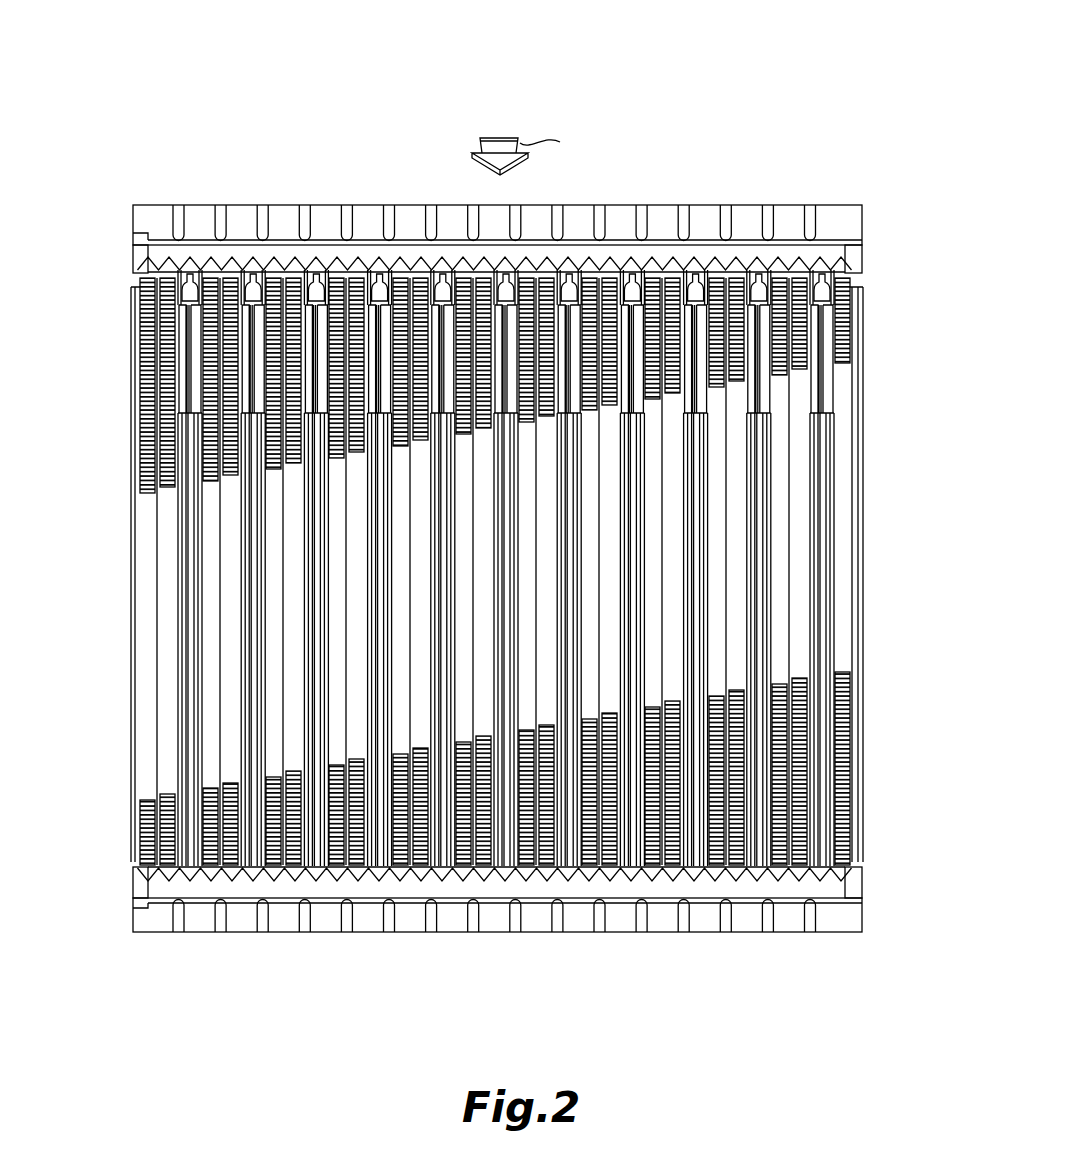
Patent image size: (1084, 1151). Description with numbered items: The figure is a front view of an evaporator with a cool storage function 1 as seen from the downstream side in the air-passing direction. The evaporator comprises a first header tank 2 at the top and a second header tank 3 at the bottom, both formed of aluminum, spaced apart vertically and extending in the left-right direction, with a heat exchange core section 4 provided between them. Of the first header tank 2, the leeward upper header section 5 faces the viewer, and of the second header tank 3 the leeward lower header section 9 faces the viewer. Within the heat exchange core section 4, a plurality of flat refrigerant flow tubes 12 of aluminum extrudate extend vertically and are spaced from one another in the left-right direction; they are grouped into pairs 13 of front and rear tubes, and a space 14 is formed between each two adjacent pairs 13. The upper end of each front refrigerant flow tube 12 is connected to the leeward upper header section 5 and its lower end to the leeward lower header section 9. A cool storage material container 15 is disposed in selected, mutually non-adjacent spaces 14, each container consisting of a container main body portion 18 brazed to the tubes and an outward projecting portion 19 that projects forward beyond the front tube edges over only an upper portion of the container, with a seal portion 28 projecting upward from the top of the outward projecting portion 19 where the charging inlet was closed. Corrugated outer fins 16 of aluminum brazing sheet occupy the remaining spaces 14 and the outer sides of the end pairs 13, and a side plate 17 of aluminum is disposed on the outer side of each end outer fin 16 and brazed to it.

The evaporator with a cool storage function 1 is at (729, 86).
The first header tank 2 is at (760, 166).
The second header tank 3 is at (610, 985).
The heat exchange core section 4 is at (862, 570).
The leeward upper header section 5 is at (283, 205).
The leeward lower header section 9 is at (535, 932).
The refrigerant flow tube 12 is at (405, 268).
The pair of refrigerant flow tubes 13 is at (730, 272).
The space 14 is at (806, 641).
The cool storage material container 15 is at (310, 875).
The corrugated outer fin 16 is at (170, 800).
The side plate 17 is at (128, 466).
The container main body portion 18 is at (250, 594).
The outward projecting portion 19 is at (772, 405).
The seal portion 28 is at (250, 270).